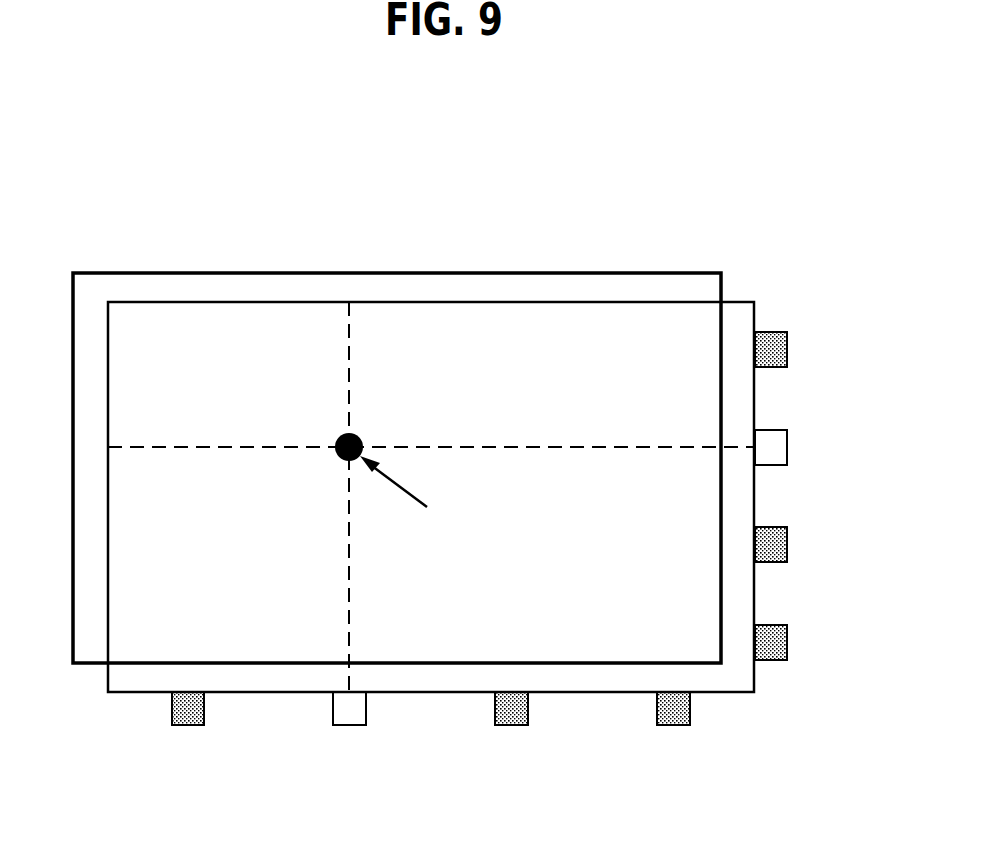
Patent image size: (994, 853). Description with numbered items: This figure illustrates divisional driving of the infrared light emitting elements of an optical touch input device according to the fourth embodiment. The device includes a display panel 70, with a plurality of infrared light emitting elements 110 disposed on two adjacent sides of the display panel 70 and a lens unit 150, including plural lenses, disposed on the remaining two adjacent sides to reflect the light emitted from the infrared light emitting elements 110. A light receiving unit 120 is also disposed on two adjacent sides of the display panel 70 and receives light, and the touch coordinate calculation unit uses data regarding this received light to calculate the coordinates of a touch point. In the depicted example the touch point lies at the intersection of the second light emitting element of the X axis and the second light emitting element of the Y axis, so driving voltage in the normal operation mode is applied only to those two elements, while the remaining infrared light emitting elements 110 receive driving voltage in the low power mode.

The display panel 70 is at (243, 340).
The lens unit 150 is at (645, 271).
The infrared light emitting elements 110 is at (768, 332).
The light receiving unit 120 is at (733, 673).